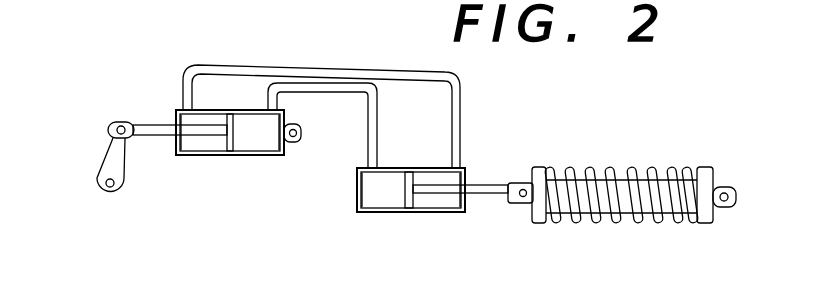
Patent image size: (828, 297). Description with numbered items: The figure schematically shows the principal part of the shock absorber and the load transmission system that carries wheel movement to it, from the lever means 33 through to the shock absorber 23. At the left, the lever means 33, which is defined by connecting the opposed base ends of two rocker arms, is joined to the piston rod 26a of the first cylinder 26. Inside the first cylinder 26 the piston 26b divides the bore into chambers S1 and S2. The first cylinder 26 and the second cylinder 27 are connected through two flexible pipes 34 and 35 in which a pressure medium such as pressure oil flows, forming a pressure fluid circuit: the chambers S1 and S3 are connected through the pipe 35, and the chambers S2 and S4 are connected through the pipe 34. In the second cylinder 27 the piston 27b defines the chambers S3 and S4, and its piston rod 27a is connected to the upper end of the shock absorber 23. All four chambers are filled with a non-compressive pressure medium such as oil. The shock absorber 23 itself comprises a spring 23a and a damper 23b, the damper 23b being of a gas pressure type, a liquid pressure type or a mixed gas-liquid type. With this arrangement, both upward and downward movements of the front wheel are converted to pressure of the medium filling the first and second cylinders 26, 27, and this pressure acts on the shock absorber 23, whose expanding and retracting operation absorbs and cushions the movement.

The shock absorber 23 is at (634, 197).
The spring 23a is at (582, 223).
The damper 23b is at (650, 223).
The first cylinder 26 is at (252, 156).
The piston rod 26a is at (153, 137).
The piston 26b is at (229, 151).
The second cylinder 27 is at (417, 209).
The piston rod 27a is at (490, 193).
The piston 27b is at (406, 201).
The lever means 33 is at (92, 162).
The flexible pipe 34 is at (300, 68).
The flexible pipe 35 is at (342, 93).
The chamber S1 is at (273, 143).
The chamber S2 is at (203, 144).
The chamber S3 is at (372, 195).
The chamber S4 is at (440, 200).